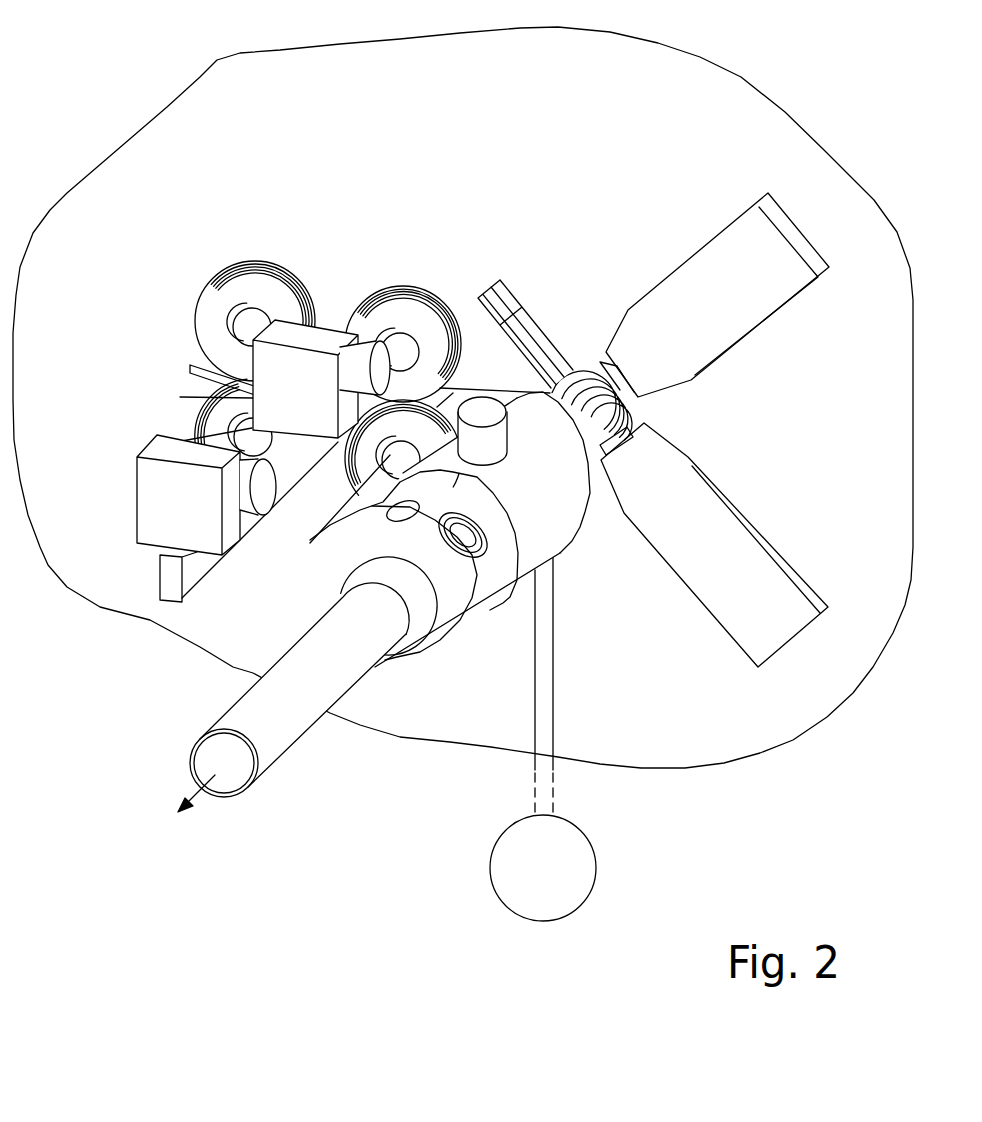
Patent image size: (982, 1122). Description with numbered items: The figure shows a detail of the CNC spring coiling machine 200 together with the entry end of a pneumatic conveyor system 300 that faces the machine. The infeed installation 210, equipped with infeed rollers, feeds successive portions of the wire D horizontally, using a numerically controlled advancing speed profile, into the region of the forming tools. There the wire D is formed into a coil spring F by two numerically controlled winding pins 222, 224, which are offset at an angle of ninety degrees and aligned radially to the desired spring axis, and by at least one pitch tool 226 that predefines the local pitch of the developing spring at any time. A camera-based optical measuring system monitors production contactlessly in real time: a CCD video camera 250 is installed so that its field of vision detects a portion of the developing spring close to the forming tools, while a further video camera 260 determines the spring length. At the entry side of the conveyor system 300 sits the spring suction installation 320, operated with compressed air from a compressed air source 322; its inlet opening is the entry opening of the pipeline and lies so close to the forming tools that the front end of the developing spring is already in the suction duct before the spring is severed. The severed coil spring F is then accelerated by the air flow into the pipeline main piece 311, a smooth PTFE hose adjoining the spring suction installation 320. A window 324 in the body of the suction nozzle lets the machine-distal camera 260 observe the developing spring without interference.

The CNC spring coiling machine 200 is at (740, 103).
The infeed installation 210 is at (318, 250).
The winding pin 222 is at (631, 420).
The winding pin 224 is at (598, 360).
The pitch tool 226 is at (526, 313).
The CCD video camera 250 is at (263, 402).
The video camera 260 is at (153, 492).
The conveyor system 300 is at (380, 656).
The pipeline main piece 311 is at (277, 740).
The spring suction installation 320 is at (440, 598).
The compressed air source 322 is at (580, 877).
The window 324 is at (420, 507).
The wire D is at (200, 367).
The coil spring F is at (514, 587).